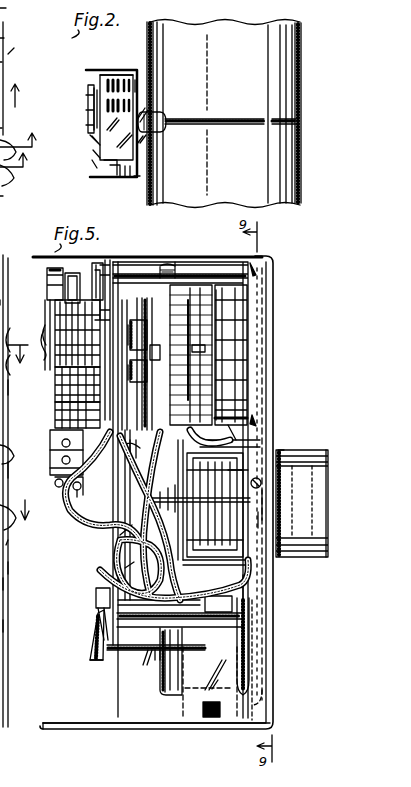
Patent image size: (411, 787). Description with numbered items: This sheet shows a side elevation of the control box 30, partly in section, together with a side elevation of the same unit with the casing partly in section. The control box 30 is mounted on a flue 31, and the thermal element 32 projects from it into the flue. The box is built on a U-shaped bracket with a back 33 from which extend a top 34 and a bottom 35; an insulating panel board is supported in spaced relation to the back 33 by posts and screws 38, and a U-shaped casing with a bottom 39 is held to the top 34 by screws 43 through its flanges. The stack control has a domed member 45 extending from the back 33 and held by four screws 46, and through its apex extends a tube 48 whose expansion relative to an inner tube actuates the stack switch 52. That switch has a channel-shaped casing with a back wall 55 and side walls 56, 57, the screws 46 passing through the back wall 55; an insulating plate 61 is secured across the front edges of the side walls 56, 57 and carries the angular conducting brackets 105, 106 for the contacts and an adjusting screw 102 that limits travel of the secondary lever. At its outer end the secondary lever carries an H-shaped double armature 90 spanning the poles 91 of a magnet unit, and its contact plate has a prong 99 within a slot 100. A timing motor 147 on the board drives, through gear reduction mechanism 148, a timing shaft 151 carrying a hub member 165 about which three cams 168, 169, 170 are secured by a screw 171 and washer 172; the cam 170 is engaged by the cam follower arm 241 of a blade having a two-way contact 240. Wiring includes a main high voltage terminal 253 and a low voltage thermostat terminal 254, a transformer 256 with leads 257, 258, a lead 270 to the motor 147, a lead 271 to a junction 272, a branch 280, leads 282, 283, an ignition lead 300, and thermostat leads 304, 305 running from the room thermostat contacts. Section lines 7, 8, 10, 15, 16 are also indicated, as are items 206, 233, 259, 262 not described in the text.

In FIG. 5, the section line 7 is at (17, 351).
In FIG. 5, the section line 8 is at (14, 490).
In FIG. 2, the section line 10 is at (18, 85).
In FIG. 2, the section line 15 is at (25, 141).
In FIG. 2, the section line 16 is at (23, 161).
In FIG. 2, the control box 30 is at (104, 59).
In FIG. 5, the control box 30 is at (106, 753).
In FIG. 2, the flue 31 is at (176, 28).
In FIG. 2, the thermal element 32 is at (168, 118).
In FIG. 5, the thermal element 32 is at (304, 430).
In FIG. 2, the back 33 is at (138, 86).
In FIG. 5, the back 33 is at (272, 352).
In FIG. 5, the top 34 is at (139, 255).
In FIG. 2, the bottom 35 is at (114, 172).
In FIG. 5, the bottom 35 is at (140, 728).
In FIG. 2, the screws 38 is at (0, 132).
In FIG. 2, the casing bottom 39 is at (0, 42).
In FIG. 5, the casing bottom 39 is at (150, 650).
In FIG. 5, the screws 43 is at (172, 258).
In FIG. 2, the domed member 45 is at (162, 114).
In FIG. 5, the domed member 45 is at (318, 454).
In FIG. 5, the screws 46 is at (283, 452).
In FIG. 2, the tube 48 is at (242, 126).
In FIG. 5, the stack switch 52 is at (276, 418).
In FIG. 5, the back wall 55 is at (268, 504).
In FIG. 5, the side wall 56 is at (232, 428).
In FIG. 5, the side wall 57 is at (255, 565).
In FIG. 5, the insulating plate 61 is at (190, 567).
In FIG. 5, the H-shaped double armature 90 is at (262, 520).
In FIG. 5, the poles 91 is at (246, 470).
In FIG. 5, the prong 99 is at (218, 604).
In FIG. 5, the slot 100 is at (263, 480).
In FIG. 5, the adjusting screw 102 is at (128, 530).
In FIG. 5, the conducting bracket 105 is at (185, 482).
In FIG. 5, the conducting bracket 106 is at (130, 565).
In FIG. 5, the control or timing motor 147 is at (212, 338).
In FIG. 5, the gear reduction mechanism 148 is at (245, 268).
In FIG. 5, the timing shaft 151 is at (185, 360).
In FIG. 5, the hub member 165 is at (96, 320).
In FIG. 2, the cam 168 is at (96, 109).
In FIG. 5, the cam 168 is at (182, 318).
In FIG. 2, the cam 169 is at (88, 79).
In FIG. 5, the cam 169 is at (72, 360).
In FIG. 2, the cam 170 is at (86, 93).
In FIG. 5, the cam 170 is at (58, 404).
In FIG. 5, the screw 171 is at (44, 342).
In FIG. 5, the washer 172 is at (56, 312).
In FIG. 5, the pivot 206 is at (56, 442).
In FIG. 5, the gear 233 is at (66, 293).
In FIG. 5, the two-way contact 240 is at (66, 262).
In FIG. 5, the cam follower arm 241 is at (47, 280).
In FIG. 2, the main high voltage terminal 253 is at (93, 155).
In FIG. 5, the main high voltage terminal 253 is at (96, 596).
In FIG. 2, the thermostat terminal 254 is at (92, 140).
In FIG. 5, the thermostat terminal 254 is at (60, 505).
In FIG. 2, the transformer 256 is at (136, 177).
In FIG. 5, the transformer 256 is at (162, 690).
In FIG. 5, the main lead 257 is at (245, 670).
In FIG. 5, the lead 258 is at (250, 605).
In FIG. 5, the pin 259 is at (72, 594).
In FIG. 5, the plate 262 is at (152, 660).
In FIG. 5, the lead 270 is at (188, 390).
In FIG. 5, the lead 271 is at (240, 395).
In FIG. 5, the junction 272 is at (139, 449).
In FIG. 2, the branch 280 is at (0, 66).
In FIG. 2, the lead 282 is at (16, 48).
In FIG. 5, the lead 283 is at (147, 400).
In FIG. 2, the lead 300 is at (92, 165).
In FIG. 5, the lead 300 is at (94, 662).
In FIG. 2, the lead 304 is at (4, 178).
In FIG. 2, the lead 305 is at (0, 200).